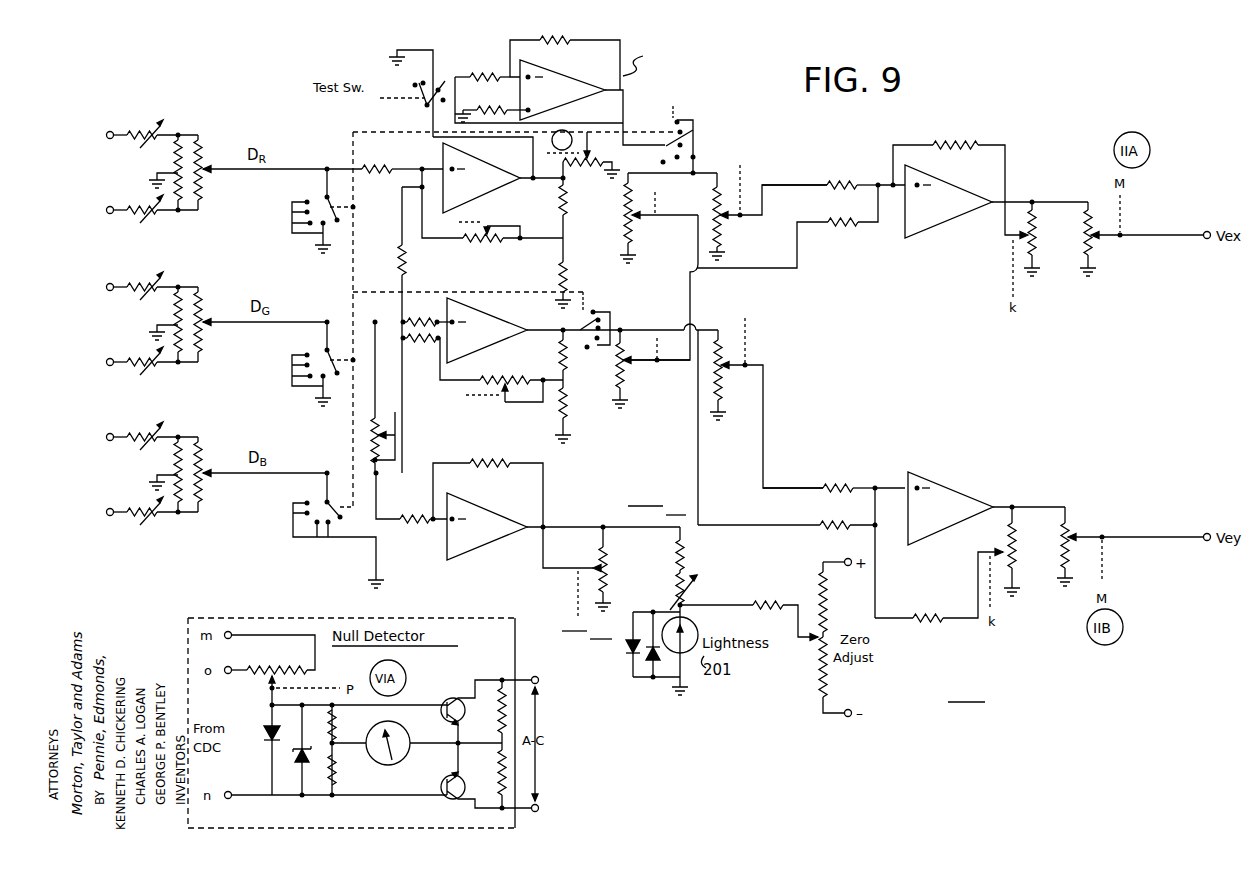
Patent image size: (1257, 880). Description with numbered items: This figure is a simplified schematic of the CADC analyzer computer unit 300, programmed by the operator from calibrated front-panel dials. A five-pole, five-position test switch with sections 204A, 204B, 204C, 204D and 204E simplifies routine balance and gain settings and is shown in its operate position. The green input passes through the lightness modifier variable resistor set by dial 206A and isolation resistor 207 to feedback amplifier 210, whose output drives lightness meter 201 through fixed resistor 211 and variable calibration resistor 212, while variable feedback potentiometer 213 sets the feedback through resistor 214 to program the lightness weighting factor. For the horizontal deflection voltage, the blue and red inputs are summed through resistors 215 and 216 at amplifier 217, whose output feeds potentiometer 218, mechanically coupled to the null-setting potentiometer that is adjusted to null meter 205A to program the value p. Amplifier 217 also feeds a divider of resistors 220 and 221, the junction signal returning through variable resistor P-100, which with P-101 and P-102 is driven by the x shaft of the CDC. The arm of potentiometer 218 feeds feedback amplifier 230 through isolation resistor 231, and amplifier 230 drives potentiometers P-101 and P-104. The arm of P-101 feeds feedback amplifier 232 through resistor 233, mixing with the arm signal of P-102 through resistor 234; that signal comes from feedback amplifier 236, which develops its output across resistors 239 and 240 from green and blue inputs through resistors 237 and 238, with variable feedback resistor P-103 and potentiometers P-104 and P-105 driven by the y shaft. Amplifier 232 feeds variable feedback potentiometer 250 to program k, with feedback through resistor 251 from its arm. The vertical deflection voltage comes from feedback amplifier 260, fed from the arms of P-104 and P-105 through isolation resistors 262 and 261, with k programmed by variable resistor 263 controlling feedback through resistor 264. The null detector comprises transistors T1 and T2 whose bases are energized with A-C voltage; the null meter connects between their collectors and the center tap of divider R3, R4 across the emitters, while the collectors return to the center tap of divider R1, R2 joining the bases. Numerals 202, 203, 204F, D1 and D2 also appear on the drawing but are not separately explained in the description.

The lightness meter 201 is at (150, 124).
The green input potentiometer 202 is at (150, 276).
The blue input potentiometer 203 is at (142, 427).
The test switch section 204A is at (313, 490).
The test switch section 204B is at (313, 343).
The test switch section 204C is at (313, 190).
The test switch section 204D is at (448, 76).
The test switch section 204E is at (692, 136).
The switch section 204F is at (610, 313).
The null meter 205A is at (415, 720).
The lightness modifier dial 206A is at (370, 439).
The isolation resistor 207 is at (416, 510).
The feedback amplifier 210 is at (510, 502).
The fixed resistor 211 is at (688, 557).
The variable calibration resistor 212 is at (693, 593).
The variable feedback potentiometer 213 is at (614, 572).
The feedback resistor 214 is at (488, 456).
The summing resistor 215 is at (398, 258).
The summing resistor 216 is at (380, 165).
The feedback amplifier 217 is at (510, 162).
The potentiometer 218 is at (572, 176).
The divider resistor 220 is at (572, 208).
The divider resistor 221 is at (569, 283).
The feedback amplifier 230 is at (583, 90).
The isolation resistor 231 is at (472, 95).
The feedback amplifier 232 is at (961, 188).
The input resistor 233 is at (856, 170).
The input resistor 234 is at (831, 211).
The feedback amplifier 236 is at (486, 314).
The input resistor 237 is at (435, 318).
The input resistor 238 is at (427, 350).
The output resistor 239 is at (572, 356).
The output resistor 240 is at (567, 414).
The variable feedback potentiometer 250 is at (1052, 238).
The feedback resistor 251 is at (937, 136).
The feedback amplifier 260 is at (971, 492).
The isolation resistor 261 is at (860, 466).
The isolation resistor 262 is at (826, 517).
The variable feedback resistor 263 is at (1003, 550).
The feedback resistor 264 is at (945, 611).
The CADC unit 300 is at (966, 693).
The variable feedback resistor P-100 is at (492, 219).
The programmable potentiometer P-101 is at (768, 216).
The programmable potentiometer P-102 is at (651, 366).
The variable feedback resistor P-103 is at (510, 377).
The programmable potentiometer P-104 is at (668, 218).
The programmable potentiometer P-105 is at (746, 361).
The divider resistor R1 is at (488, 715).
The divider resistor R2 is at (489, 779).
The divider resistor R3 is at (342, 725).
The divider resistor R4 is at (342, 770).
The transistor T1 is at (450, 694).
The transistor T2 is at (449, 798).
The diode D1 is at (264, 728).
The zener diode D2 is at (300, 762).